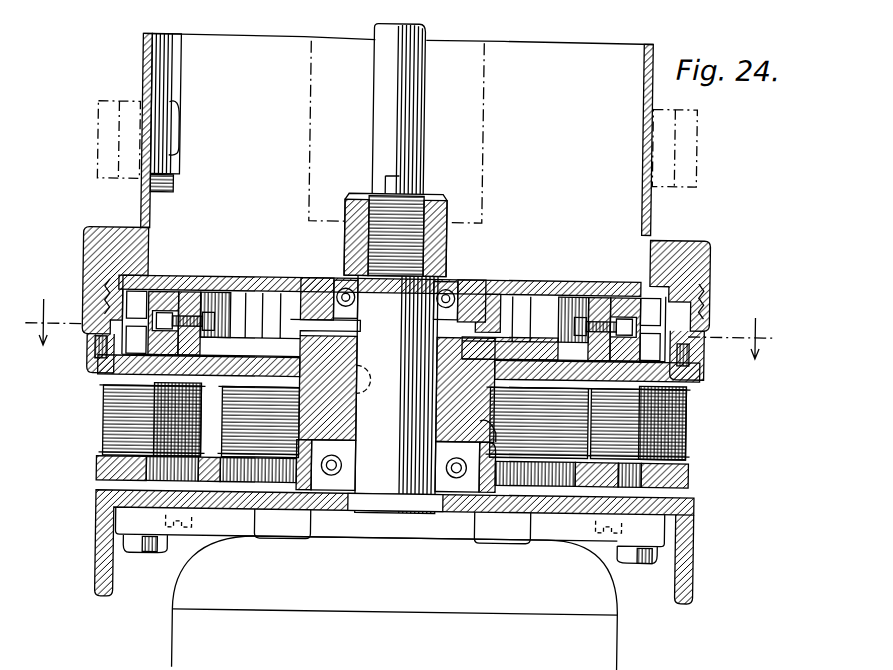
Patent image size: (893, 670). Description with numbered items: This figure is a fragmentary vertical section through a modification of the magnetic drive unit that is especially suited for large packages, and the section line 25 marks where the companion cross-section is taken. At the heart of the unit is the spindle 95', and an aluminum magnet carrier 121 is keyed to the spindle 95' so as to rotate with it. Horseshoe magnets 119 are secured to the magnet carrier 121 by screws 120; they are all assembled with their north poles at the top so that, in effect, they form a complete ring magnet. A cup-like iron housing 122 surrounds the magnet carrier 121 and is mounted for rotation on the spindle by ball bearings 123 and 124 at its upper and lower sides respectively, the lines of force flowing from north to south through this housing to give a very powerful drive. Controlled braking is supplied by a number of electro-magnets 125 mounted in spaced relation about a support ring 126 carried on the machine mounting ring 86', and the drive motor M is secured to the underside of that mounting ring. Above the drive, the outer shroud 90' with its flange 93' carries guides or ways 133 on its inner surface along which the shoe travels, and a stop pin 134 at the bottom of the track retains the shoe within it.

The housing 90' is at (398, 121).
The flange 93' is at (402, 287).
The guides or ways 133 is at (178, 79).
The stop pin 134 is at (163, 197).
The ball bearing 123 is at (452, 276).
The iron housing 122 is at (291, 279).
The horseshoe magnets 119 is at (164, 294).
The screws 120 is at (228, 325).
The magnet carrier 121 is at (502, 357).
The ball bearing 124 is at (480, 492).
The electro-magnets 125 is at (104, 416).
The support ring 126 is at (692, 478).
The machine mounting ring 86' is at (415, 547).
The spindle 95' is at (390, 535).
The section line 25- 25 is at (400, 320).
The drive motor M is at (620, 643).